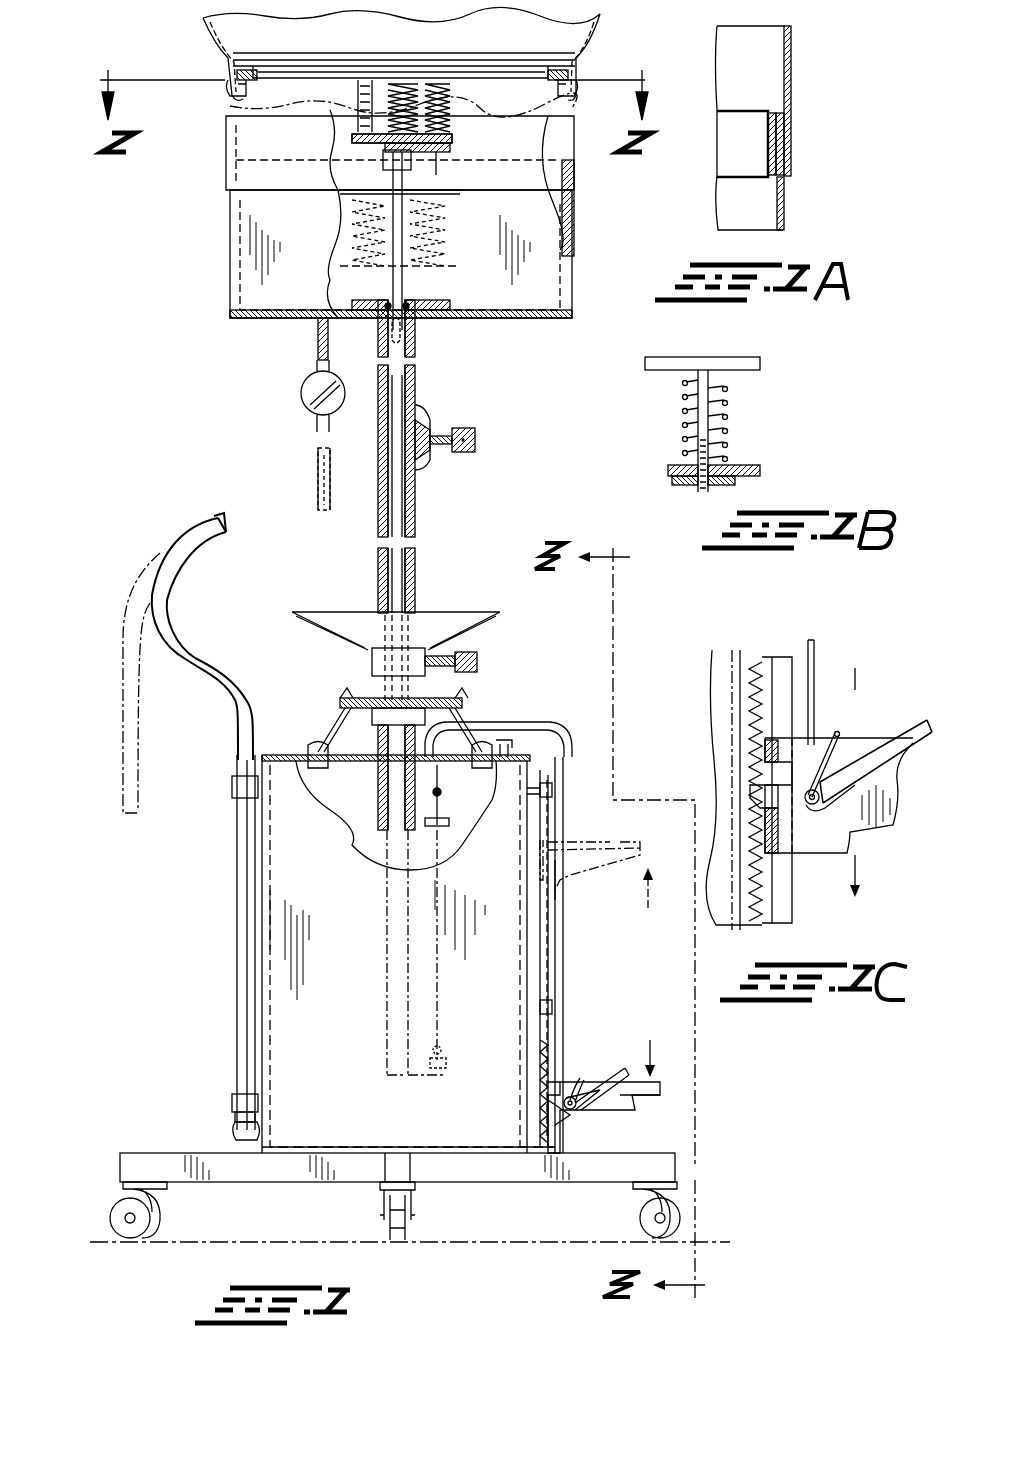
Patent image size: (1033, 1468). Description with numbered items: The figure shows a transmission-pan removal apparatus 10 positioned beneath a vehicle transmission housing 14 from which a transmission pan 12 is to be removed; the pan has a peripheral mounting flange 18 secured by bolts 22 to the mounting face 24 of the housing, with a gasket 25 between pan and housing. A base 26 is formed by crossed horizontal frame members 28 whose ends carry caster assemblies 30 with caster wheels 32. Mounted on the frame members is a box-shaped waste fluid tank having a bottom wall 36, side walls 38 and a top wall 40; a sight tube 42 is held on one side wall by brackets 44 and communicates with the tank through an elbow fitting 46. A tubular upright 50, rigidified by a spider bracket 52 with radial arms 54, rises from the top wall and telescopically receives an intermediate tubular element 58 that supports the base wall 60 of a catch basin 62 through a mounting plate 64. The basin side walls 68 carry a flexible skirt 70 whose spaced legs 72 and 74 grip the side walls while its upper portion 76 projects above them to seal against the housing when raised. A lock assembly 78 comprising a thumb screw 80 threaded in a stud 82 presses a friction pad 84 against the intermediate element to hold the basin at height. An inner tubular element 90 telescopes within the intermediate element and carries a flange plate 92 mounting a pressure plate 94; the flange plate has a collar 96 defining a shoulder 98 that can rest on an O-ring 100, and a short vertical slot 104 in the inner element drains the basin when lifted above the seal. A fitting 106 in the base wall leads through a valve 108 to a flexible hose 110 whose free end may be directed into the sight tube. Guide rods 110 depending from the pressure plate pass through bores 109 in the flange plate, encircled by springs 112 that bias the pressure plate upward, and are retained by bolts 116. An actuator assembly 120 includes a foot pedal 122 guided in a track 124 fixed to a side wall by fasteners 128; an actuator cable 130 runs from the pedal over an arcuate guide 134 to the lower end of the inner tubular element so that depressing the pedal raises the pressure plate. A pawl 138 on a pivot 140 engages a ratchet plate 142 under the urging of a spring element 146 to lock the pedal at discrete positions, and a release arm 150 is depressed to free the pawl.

In FIG. 1, the apparatus 10 is at (230, 895).
In FIG. 1, the transmission pan 12 is at (510, 72).
In FIG. 1, the transmission housing 14 is at (212, 20).
In FIG. 1, the mounting flange 18 is at (285, 66).
In FIG. 1, the bolts 22 is at (228, 88).
In FIG. 1, the mounting face 24 is at (318, 60).
In FIG. 1, the gasket 25 is at (470, 58).
In FIG. 1, the base 26 is at (300, 1184).
In FIG. 1, the horizontal frame members 28 is at (425, 1170).
In FIG. 1, the caster assemblies 30 is at (125, 1240).
In FIG. 1, the caster wheels 32 is at (395, 1245).
In FIG. 1, the bottom wall 36 is at (283, 1147).
In FIG. 1, the side walls 38 is at (545, 818).
In FIG. 1C, the side walls 38 is at (752, 930).
In FIG. 1, the top wall 40 is at (355, 765).
In FIG. 1, the sight tube 42 is at (236, 816).
In FIG. 1, the brackets 44 is at (232, 786).
In FIG. 1, the elbow fitting 46 is at (236, 1132).
In FIG. 1, the tubular upright 50 is at (416, 582).
In FIG. 1, the spider bracket 52 is at (332, 738).
In FIG. 1, the radial arms 54 is at (455, 745).
In FIG. 1, the intermediate tubular element 58 is at (416, 348).
In FIG. 1, the base wall 60 is at (440, 320).
In FIG. 1, the catch basin 62 is at (576, 296).
In FIG. 1, the mounting plate 64 is at (365, 300).
In FIG. 1, the side walls 68 is at (576, 218).
In FIG. 1A, the side walls 68 is at (786, 212).
In FIG. 1, the flexible skirt 70 is at (226, 130).
In FIG. 1A, the flexible skirt 70 is at (775, 76).
In FIG. 1A, the leg 72 is at (790, 152).
In FIG. 1A, the leg 74 is at (768, 145).
In FIG. 1A, the upper portion 76 is at (792, 44).
In FIG. 1, the catch basin lock assembly 78 is at (480, 440).
In FIG. 1, the thumb screw 80 is at (466, 428).
In FIG. 1, the stud 82 is at (430, 440).
In FIG. 1, the friction pad 84 is at (422, 412).
In FIG. 1, the inner tubular element 90 is at (405, 505).
In FIG. 1, the flange plate 92 is at (452, 138).
In FIG. 1B, the flange plate 92 is at (752, 478).
In FIG. 1, the pressure plate 94 is at (352, 136).
In FIG. 1B, the pressure plate 94 is at (728, 356).
In FIG. 1, the collar 96 is at (383, 160).
In FIG. 1, the shoulder 98 is at (412, 241).
In FIG. 1, the O-ring seal 100 is at (410, 306).
In FIG. 1, the vertical slot 104 is at (340, 215).
In FIG. 1, the fitting 106 is at (318, 325).
In FIG. 1, the valve 108 is at (301, 380).
In FIG. 1B, the bores 109 is at (718, 462).
In FIG. 1, the flexible hose 110 is at (436, 160).
In FIG. 1B, the flexible hose 110 is at (712, 382).
In FIG. 1, the springs 112 is at (450, 96).
In FIG. 1B, the springs 112 is at (728, 408).
In FIG. 1, the bolts 116 is at (450, 148).
In FIG. 1B, the bolts 116 is at (680, 486).
In FIG. 1, the actuator assembly 120 is at (562, 718).
In FIG. 1, the foot pedal 122 is at (630, 1105).
In FIG. 1C, the foot pedal 122 is at (866, 738).
In FIG. 1C, the track 124 is at (768, 665).
In FIG. 1, the fasteners 128 is at (552, 790).
In FIG. 1, the actuator cable 130 is at (437, 780).
In FIG. 1C, the actuator cable 130 is at (815, 660).
In FIG. 1, the arcuate guide 134 is at (500, 722).
In FIG. 1, the pawl 138 is at (553, 1115).
In FIG. 1C, the pawl 138 is at (785, 808).
In FIG. 1, the pivot 140 is at (580, 1110).
In FIG. 1C, the pivot 140 is at (815, 808).
In FIG. 1, the ratchet plate 142 is at (535, 1065).
In FIG. 1C, the ratchet plate 142 is at (745, 700).
In FIG. 1, the spring element 146 is at (573, 1080).
In FIG. 1C, the spring element 146 is at (822, 740).
In FIG. 1, the release arm 150 is at (605, 1075).
In FIG. 1C, the release arm 150 is at (905, 738).